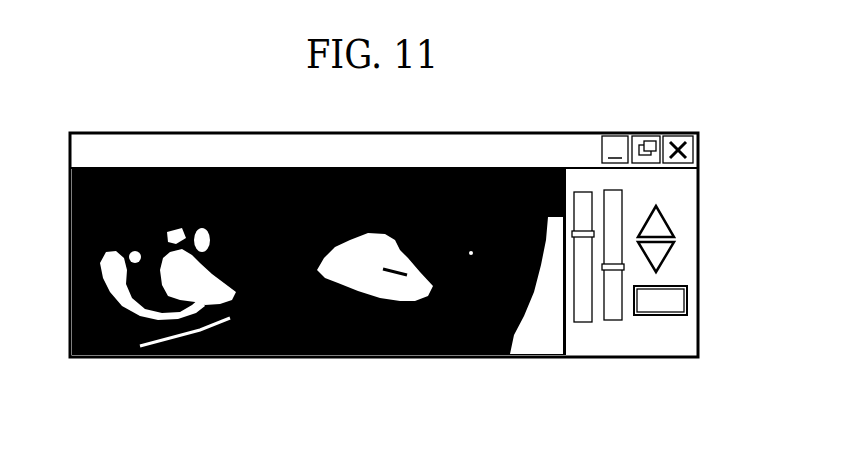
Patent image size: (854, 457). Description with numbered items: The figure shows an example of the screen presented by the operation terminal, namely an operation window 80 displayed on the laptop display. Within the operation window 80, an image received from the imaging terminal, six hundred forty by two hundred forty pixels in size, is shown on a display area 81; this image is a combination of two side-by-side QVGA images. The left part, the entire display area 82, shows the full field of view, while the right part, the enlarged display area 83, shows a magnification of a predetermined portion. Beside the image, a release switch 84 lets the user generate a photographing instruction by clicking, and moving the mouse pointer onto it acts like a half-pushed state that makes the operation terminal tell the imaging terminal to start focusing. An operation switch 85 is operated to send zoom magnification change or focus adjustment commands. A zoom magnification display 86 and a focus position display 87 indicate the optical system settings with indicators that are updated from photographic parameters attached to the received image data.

The operation window 80 is at (430, 265).
The display area 81 is at (318, 307).
The entire display area 82 is at (240, 318).
The enlarged display area 83 is at (440, 310).
The release switch 84 is at (675, 293).
The operation switch 85 is at (683, 235).
The zoom magnification display 86 is at (587, 341).
The focus position display 87 is at (636, 335).